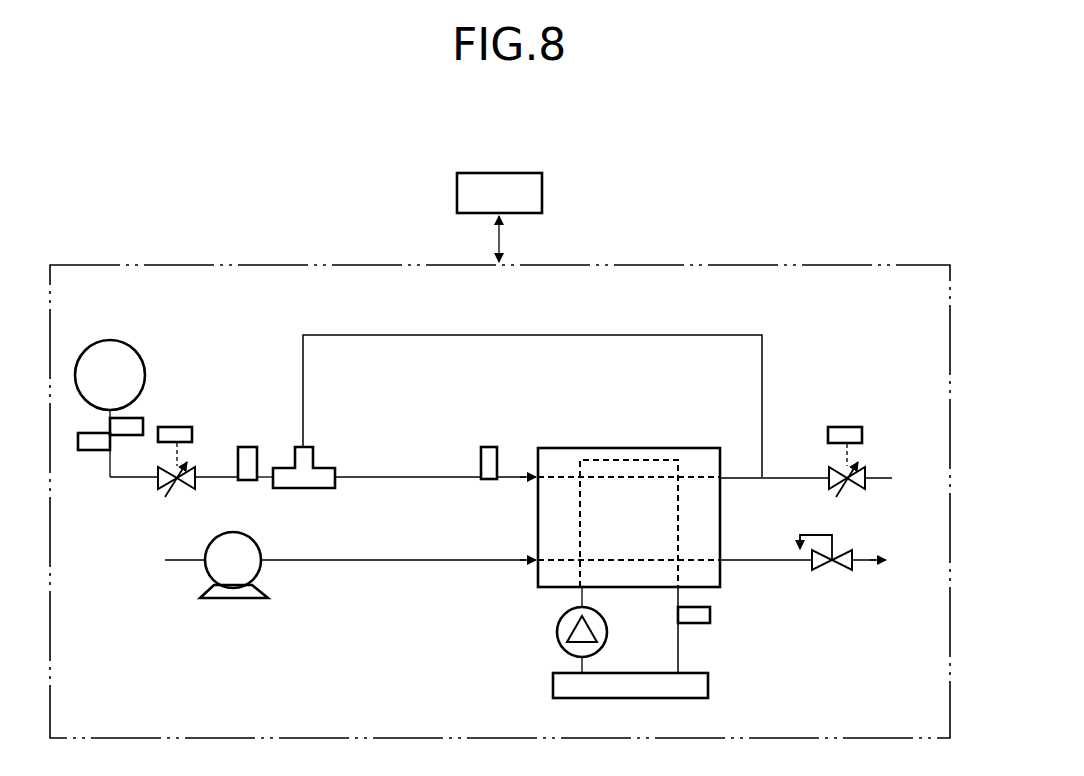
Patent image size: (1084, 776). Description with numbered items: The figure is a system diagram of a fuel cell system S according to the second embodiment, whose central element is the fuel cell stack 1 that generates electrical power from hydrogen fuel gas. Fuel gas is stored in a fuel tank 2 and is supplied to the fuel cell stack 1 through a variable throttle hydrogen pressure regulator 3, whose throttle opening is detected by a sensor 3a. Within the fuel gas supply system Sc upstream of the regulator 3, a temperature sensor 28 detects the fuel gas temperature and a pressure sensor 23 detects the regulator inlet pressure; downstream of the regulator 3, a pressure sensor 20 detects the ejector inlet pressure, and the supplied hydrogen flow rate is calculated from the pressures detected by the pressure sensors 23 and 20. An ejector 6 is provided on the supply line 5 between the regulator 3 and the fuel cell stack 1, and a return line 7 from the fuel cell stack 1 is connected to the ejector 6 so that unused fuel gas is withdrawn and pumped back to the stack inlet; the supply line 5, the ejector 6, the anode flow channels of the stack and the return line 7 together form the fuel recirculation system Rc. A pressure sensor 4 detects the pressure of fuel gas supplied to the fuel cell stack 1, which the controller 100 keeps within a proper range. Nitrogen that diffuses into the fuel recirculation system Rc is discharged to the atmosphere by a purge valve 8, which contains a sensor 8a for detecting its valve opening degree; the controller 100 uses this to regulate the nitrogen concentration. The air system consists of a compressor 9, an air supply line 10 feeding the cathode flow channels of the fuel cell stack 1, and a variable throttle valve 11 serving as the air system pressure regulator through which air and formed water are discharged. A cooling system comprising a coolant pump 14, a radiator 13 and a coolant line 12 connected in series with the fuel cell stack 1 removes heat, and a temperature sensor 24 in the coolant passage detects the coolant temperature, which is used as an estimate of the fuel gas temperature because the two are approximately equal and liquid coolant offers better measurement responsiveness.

The controller 100 is at (543, 193).
The fuel cell system S is at (760, 220).
The fuel tank 2 is at (104, 346).
The fuel gas supply system Sc is at (190, 350).
The fuel recirculation system Rc is at (340, 320).
The temperature sensor 28 is at (138, 417).
The pressure sensor 23 is at (88, 451).
The variable throttle hydrogen pressure regulator 3 is at (170, 487).
The sensor 3a is at (184, 426).
The pressure sensor 20 is at (250, 446).
The ejector 6 is at (313, 456).
The supply line 5 is at (414, 475).
The pressure sensor 4 is at (488, 446).
The return line 7 is at (667, 334).
The fuel cell stack 1 is at (660, 447).
The purge valve 8 is at (866, 483).
The sensor 8a is at (862, 435).
The compressor 9 is at (243, 600).
The air supply line 10 is at (386, 562).
The variable throttle valve 11 is at (830, 571).
The coolant pump 14 is at (556, 632).
The radiator 13 is at (552, 687).
The coolant line 12 is at (680, 651).
The temperature sensor 24 is at (711, 615).